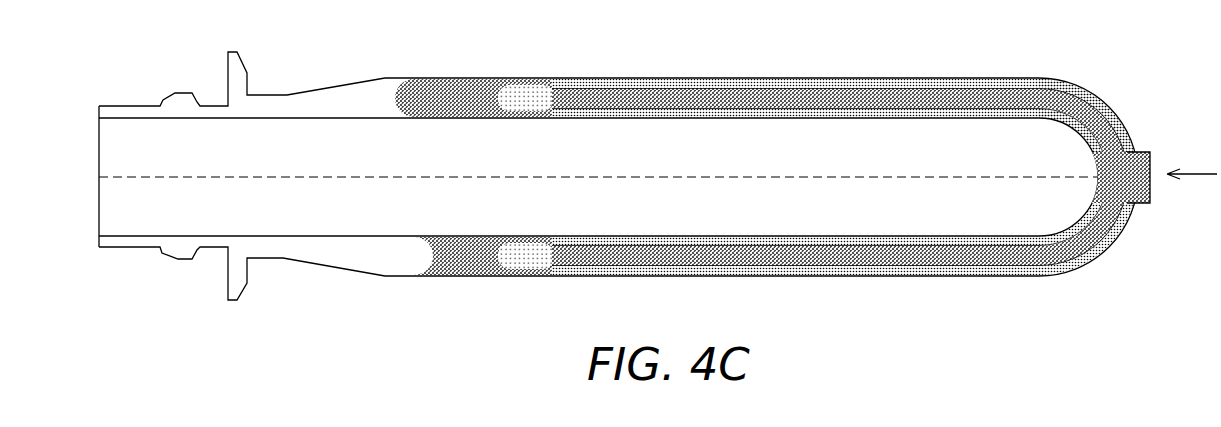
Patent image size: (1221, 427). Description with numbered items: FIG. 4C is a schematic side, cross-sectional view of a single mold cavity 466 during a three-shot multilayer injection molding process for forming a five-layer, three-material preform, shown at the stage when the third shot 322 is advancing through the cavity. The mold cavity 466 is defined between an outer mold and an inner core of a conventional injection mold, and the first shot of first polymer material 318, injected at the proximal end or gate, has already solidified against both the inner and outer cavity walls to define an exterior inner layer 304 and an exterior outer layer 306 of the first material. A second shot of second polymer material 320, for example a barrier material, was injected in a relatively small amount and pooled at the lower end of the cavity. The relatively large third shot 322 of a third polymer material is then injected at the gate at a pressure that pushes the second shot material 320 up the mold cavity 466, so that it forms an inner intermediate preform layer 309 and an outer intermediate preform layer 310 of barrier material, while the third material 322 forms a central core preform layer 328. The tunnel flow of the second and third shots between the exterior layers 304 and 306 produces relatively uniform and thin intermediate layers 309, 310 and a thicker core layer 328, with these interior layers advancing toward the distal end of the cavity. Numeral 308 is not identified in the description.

The exterior inner preform layer 304 is at (760, 118).
The exterior outer preform layer 306 is at (775, 80).
The inner layer bent portion 308 is at (917, 118).
The inner intermediate preform layer 309 is at (622, 252).
The outer intermediate preform layer 310 is at (695, 260).
The first polymer material 318 is at (935, 80).
The second polymer material 320 is at (783, 252).
The third shot 322 is at (1217, 178).
The central core preform layer 328 is at (640, 93).
The mold cavity 466 is at (346, 253).